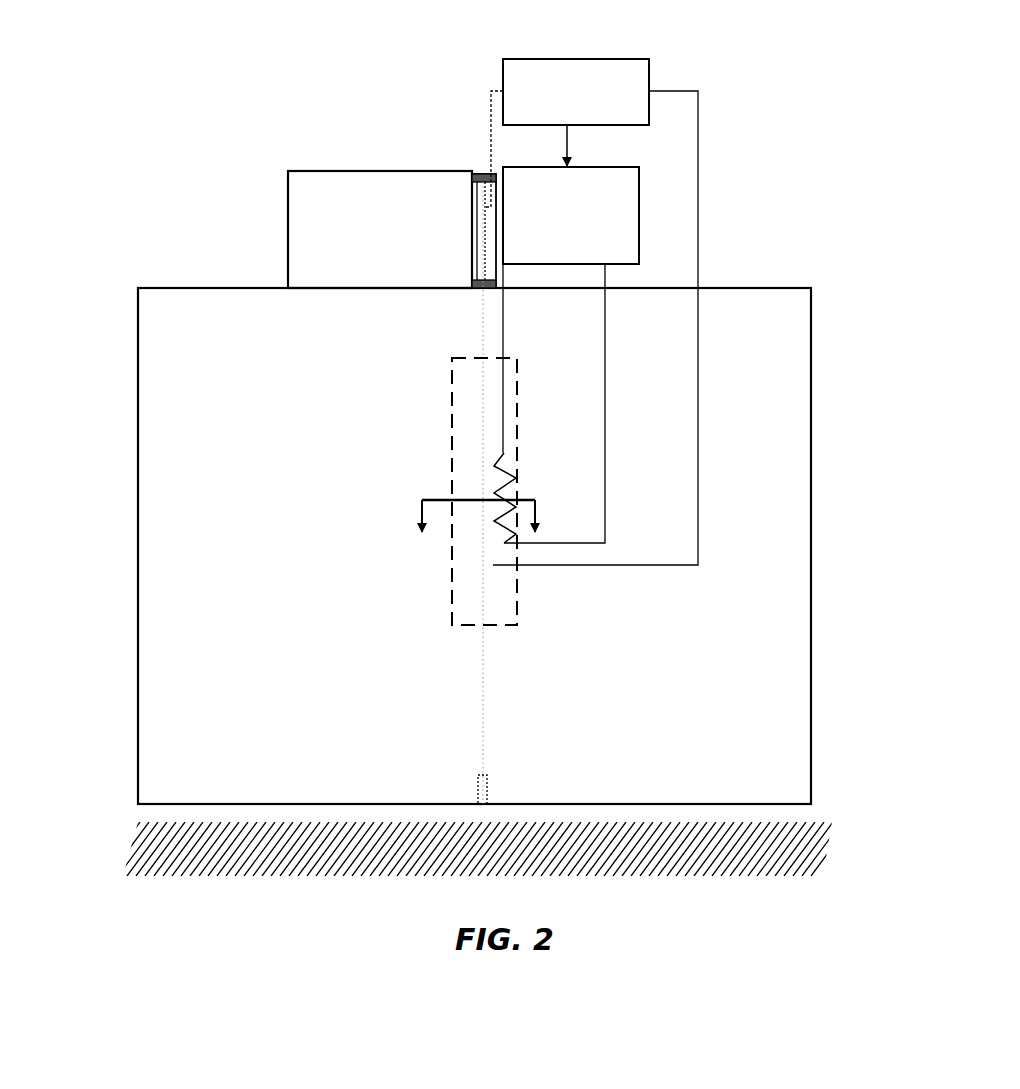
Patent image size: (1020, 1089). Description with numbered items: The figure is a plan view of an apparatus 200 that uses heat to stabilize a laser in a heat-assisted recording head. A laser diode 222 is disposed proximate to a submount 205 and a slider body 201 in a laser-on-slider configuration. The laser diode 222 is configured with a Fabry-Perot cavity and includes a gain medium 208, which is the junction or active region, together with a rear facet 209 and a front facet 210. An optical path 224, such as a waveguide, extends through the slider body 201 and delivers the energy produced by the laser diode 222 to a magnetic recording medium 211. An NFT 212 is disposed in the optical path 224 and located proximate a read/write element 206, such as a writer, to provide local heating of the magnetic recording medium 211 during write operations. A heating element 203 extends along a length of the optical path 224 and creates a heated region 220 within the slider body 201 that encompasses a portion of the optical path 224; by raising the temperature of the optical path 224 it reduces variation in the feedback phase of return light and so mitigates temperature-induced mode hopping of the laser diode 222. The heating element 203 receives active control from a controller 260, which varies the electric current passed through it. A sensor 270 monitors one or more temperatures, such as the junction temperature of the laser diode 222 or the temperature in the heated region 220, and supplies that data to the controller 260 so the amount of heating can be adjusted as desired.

The apparatus 200 is at (752, 98).
The slider body 201 is at (138, 410).
The heating element 203 is at (510, 482).
The submount 205 is at (288, 212).
The read/write element 206 is at (490, 797).
The gain medium 208 is at (483, 257).
The rear facet 209 is at (482, 173).
The front facet 210 is at (490, 290).
The magnetic recording medium 211 is at (725, 857).
The NFT 212 is at (480, 803).
The heated region 220 is at (450, 482).
The laser diode 222 is at (468, 206).
The optical path 224 is at (484, 710).
The controller 260 is at (624, 166).
The sensor 270 is at (608, 58).